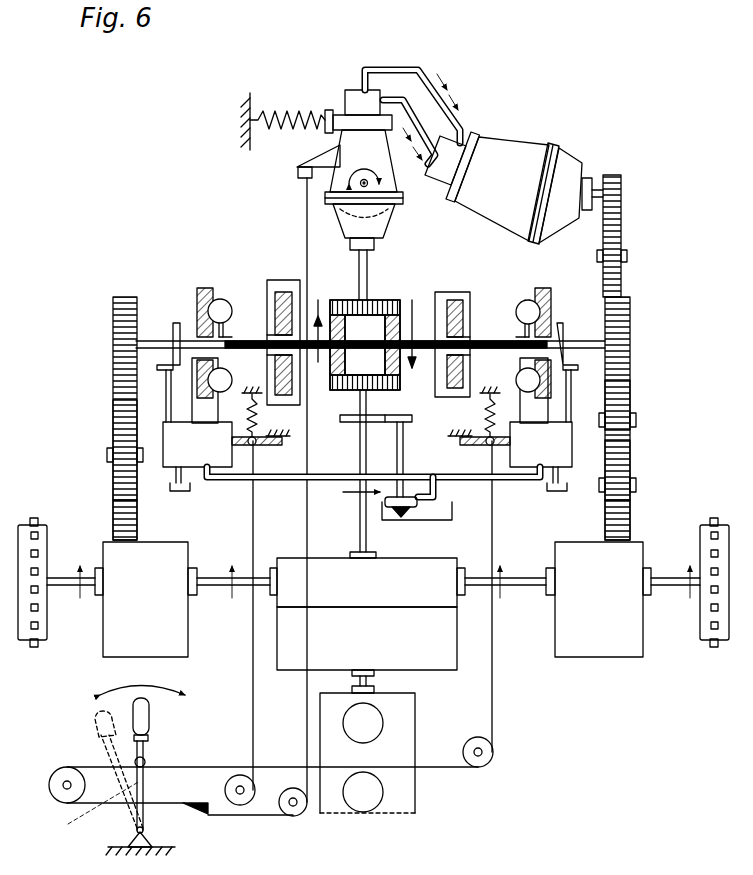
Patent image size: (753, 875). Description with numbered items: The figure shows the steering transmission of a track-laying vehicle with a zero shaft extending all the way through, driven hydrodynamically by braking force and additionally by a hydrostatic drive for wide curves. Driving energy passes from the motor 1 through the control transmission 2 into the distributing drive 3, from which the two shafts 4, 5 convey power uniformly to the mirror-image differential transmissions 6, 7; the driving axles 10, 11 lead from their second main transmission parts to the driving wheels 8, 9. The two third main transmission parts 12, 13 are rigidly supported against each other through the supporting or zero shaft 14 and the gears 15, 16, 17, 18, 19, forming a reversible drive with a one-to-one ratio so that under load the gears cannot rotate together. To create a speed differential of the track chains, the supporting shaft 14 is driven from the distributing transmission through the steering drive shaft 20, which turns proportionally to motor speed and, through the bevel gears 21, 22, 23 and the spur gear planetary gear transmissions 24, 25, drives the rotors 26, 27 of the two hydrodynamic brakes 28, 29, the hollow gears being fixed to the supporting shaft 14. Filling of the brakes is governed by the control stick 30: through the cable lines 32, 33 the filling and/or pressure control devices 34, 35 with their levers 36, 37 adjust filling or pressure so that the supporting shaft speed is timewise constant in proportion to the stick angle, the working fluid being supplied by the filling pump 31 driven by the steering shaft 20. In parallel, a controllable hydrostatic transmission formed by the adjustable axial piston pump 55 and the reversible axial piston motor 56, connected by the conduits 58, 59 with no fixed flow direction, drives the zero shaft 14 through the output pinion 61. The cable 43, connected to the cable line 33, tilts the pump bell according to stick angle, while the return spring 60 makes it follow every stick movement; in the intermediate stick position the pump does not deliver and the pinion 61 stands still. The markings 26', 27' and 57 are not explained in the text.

The motor 1 is at (410, 786).
The control transmission 2 is at (430, 661).
The distributing drive 3 is at (404, 605).
The shaft 4 is at (528, 584).
The shaft 5 is at (212, 583).
The differential transmission 6 is at (607, 617).
The differential transmission 7 is at (150, 617).
The driving wheel 8 is at (703, 611).
The driving wheel 9 is at (40, 626).
The driving axle 10 is at (655, 580).
The driving axle 11 is at (50, 578).
The third main transmission part 12 is at (632, 528).
The third main transmission part 13 is at (128, 526).
The supporting shaft 14 is at (352, 345).
The gear 15 is at (641, 463).
The gear 16 is at (641, 401).
The gear 17 is at (644, 358).
The gear 18 is at (125, 481).
The gear 19 is at (125, 373).
The steering drive shaft 20 is at (362, 453).
The bevel gear 21 is at (343, 383).
The bevel gear 22 is at (396, 379).
The bevel gear 23 is at (344, 359).
The spur gear planetary gear transmission 24 is at (450, 290).
The spur gear planetary gear transmission 25 is at (262, 280).
The rotor 26 is at (513, 312).
The right clutch movement arrow 26' is at (402, 316).
The rotor 27 is at (231, 311).
The left clutch movement arrow 27' is at (330, 313).
The hydrodynamic brake 28 is at (516, 375).
The hydrodynamic brake 29 is at (228, 376).
The control stick 30 is at (146, 751).
The filling pump 31 is at (402, 519).
The cable line 32 is at (494, 702).
The cable line 33 is at (256, 752).
The filling and/or pressure control device 34 is at (556, 457).
The filling and/or pressure control device 35 is at (210, 457).
The lever 36 is at (480, 446).
The lever 37 is at (255, 444).
The cable 43 is at (309, 596).
The axial piston pump 55 is at (378, 166).
The axial piston motor 56 is at (512, 192).
The pivot 57 is at (367, 185).
The conduit 58 is at (420, 130).
The conduit 59 is at (411, 69).
The return spring 60 is at (282, 111).
The output pinion 61 is at (616, 197).